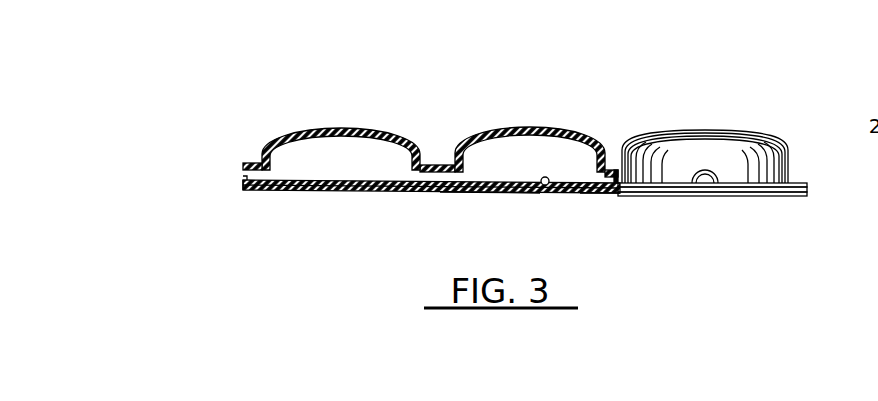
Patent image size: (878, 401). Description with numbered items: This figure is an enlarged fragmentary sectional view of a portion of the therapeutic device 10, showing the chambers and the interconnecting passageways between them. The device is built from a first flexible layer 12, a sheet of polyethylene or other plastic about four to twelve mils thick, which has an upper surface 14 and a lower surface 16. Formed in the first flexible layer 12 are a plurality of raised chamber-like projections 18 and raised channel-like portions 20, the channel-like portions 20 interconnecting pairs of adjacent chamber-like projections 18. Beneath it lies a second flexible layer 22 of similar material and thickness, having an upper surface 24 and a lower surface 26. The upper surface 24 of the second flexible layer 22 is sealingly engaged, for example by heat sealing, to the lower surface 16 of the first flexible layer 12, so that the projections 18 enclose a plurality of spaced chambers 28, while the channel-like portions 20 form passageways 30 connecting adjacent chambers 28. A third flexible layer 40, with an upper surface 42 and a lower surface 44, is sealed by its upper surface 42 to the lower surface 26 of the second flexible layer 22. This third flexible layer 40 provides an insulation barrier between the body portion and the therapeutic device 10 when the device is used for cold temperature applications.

The therapeutic device 10 is at (312, 101).
The first flexible layer 12 is at (803, 183).
The upper surface 14 is at (808, 188).
The lower surface 16 is at (808, 194).
The raised chamber-like projections 18 is at (333, 130).
The raised channel-like portions 20 is at (437, 164).
The second flexible layer 22 is at (595, 193).
The upper surface 24 is at (545, 190).
The lower surface 26 is at (490, 193).
The chambers 28 is at (411, 162).
The passageways 30 is at (431, 177).
The third flexible layer 40 is at (320, 191).
The upper surface 42 is at (358, 191).
The lower surface 44 is at (280, 191).